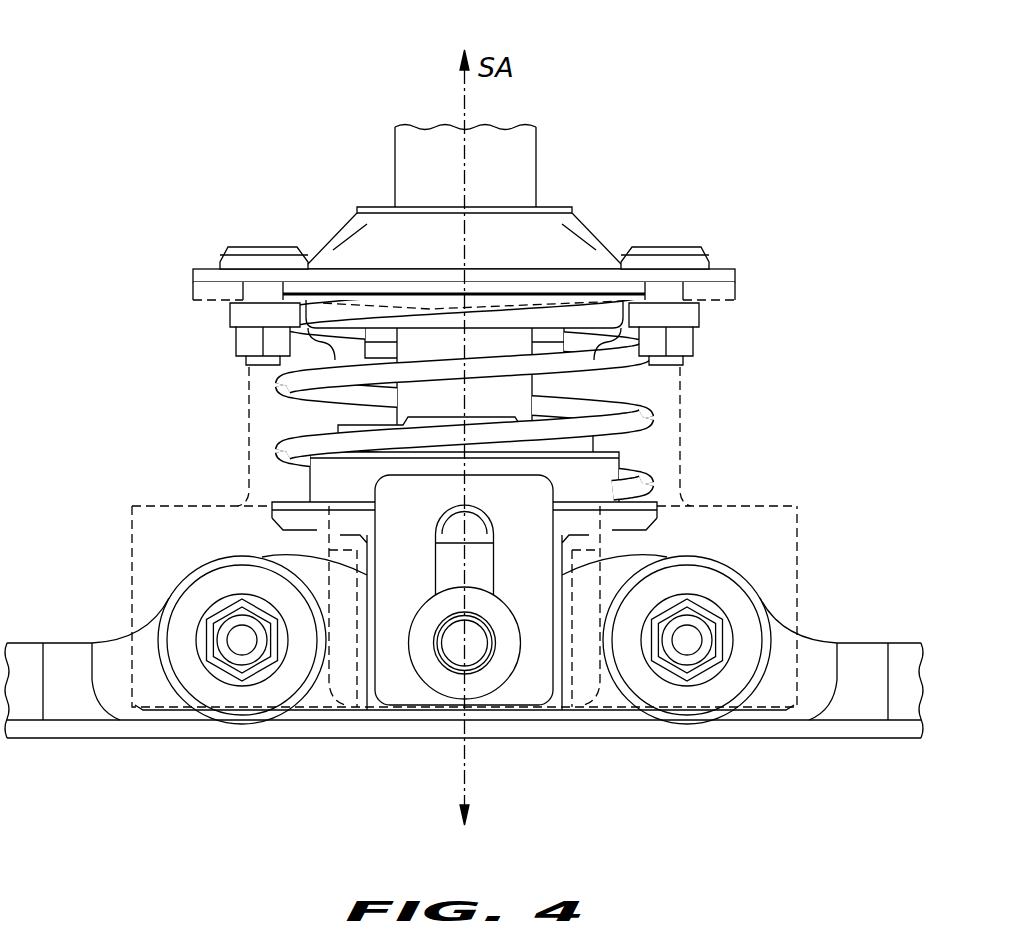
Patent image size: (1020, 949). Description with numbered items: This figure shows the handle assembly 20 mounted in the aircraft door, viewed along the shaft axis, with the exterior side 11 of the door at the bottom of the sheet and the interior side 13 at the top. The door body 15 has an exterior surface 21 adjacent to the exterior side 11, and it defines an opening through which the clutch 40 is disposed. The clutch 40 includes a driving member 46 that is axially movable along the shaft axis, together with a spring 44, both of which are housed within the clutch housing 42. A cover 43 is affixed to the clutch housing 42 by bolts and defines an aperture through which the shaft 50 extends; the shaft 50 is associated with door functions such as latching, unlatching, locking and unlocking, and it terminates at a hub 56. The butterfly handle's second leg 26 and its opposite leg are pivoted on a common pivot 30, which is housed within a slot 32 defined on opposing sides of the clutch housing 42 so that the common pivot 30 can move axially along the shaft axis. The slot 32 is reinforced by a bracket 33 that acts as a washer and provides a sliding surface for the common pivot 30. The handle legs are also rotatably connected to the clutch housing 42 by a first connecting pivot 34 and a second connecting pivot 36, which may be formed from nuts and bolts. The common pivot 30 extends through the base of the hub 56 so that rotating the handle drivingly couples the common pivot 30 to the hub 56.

The exterior side 11 is at (168, 855).
The interior side 13 is at (168, 31).
The door body 15 is at (137, 728).
The handle assembly 20 is at (805, 157).
The exterior surface 21 is at (80, 740).
The second leg 26 is at (58, 658).
The common pivot 30 is at (457, 650).
The slot 32 is at (497, 520).
The bracket 33 is at (522, 690).
The first connecting pivot 34 is at (242, 642).
The second connecting pivot 36 is at (688, 642).
The clutch 40 is at (780, 387).
The clutch housing 42 is at (743, 505).
The cover 43 is at (331, 247).
The spring 44 is at (653, 428).
The driving member 46 is at (650, 388).
The shaft 50 is at (538, 163).
The hub 56 is at (310, 481).